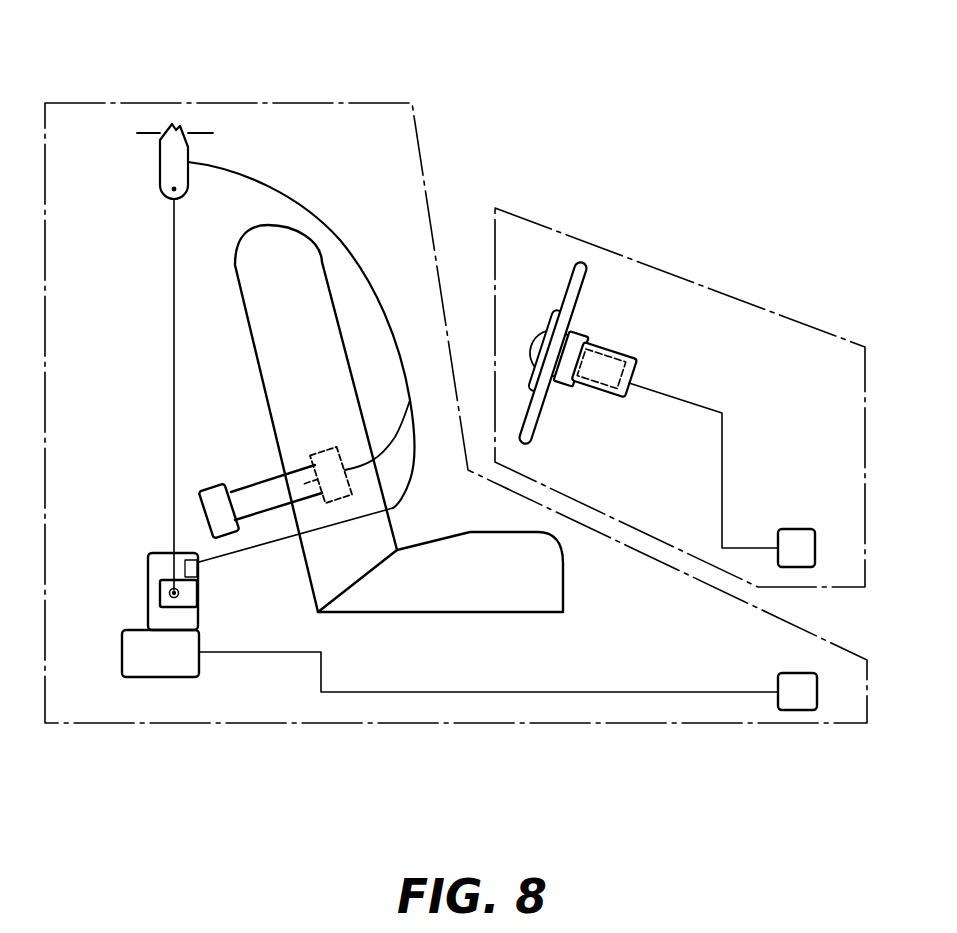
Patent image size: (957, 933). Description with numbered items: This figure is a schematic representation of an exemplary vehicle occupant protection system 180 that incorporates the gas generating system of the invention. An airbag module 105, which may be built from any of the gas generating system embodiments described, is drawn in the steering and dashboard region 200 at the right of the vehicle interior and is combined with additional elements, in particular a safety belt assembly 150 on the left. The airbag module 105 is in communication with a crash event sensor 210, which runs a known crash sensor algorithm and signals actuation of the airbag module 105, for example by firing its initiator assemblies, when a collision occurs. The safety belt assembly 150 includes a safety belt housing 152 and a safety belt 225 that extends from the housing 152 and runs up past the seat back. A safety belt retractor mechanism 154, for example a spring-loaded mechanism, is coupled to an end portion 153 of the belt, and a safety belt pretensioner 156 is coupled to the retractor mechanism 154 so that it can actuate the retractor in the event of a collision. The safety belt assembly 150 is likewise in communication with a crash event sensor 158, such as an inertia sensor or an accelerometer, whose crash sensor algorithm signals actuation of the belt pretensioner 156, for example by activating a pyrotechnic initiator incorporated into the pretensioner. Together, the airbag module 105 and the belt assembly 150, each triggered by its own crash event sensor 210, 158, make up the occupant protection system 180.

The vehicle occupant protection system 180 is at (486, 31).
The safety belt assembly 150 is at (376, 722).
The safety belt 225 is at (322, 208).
The end portion of the belt 153 is at (187, 567).
The safety belt retractor mechanism 154 is at (158, 553).
The safety belt housing 152 is at (159, 593).
The safety belt pretensioner 156 is at (162, 677).
The crash event sensor 158 is at (780, 676).
The steering assembly 200 is at (670, 269).
The airbag module 105 is at (557, 350).
The crash event sensor 210 is at (795, 543).